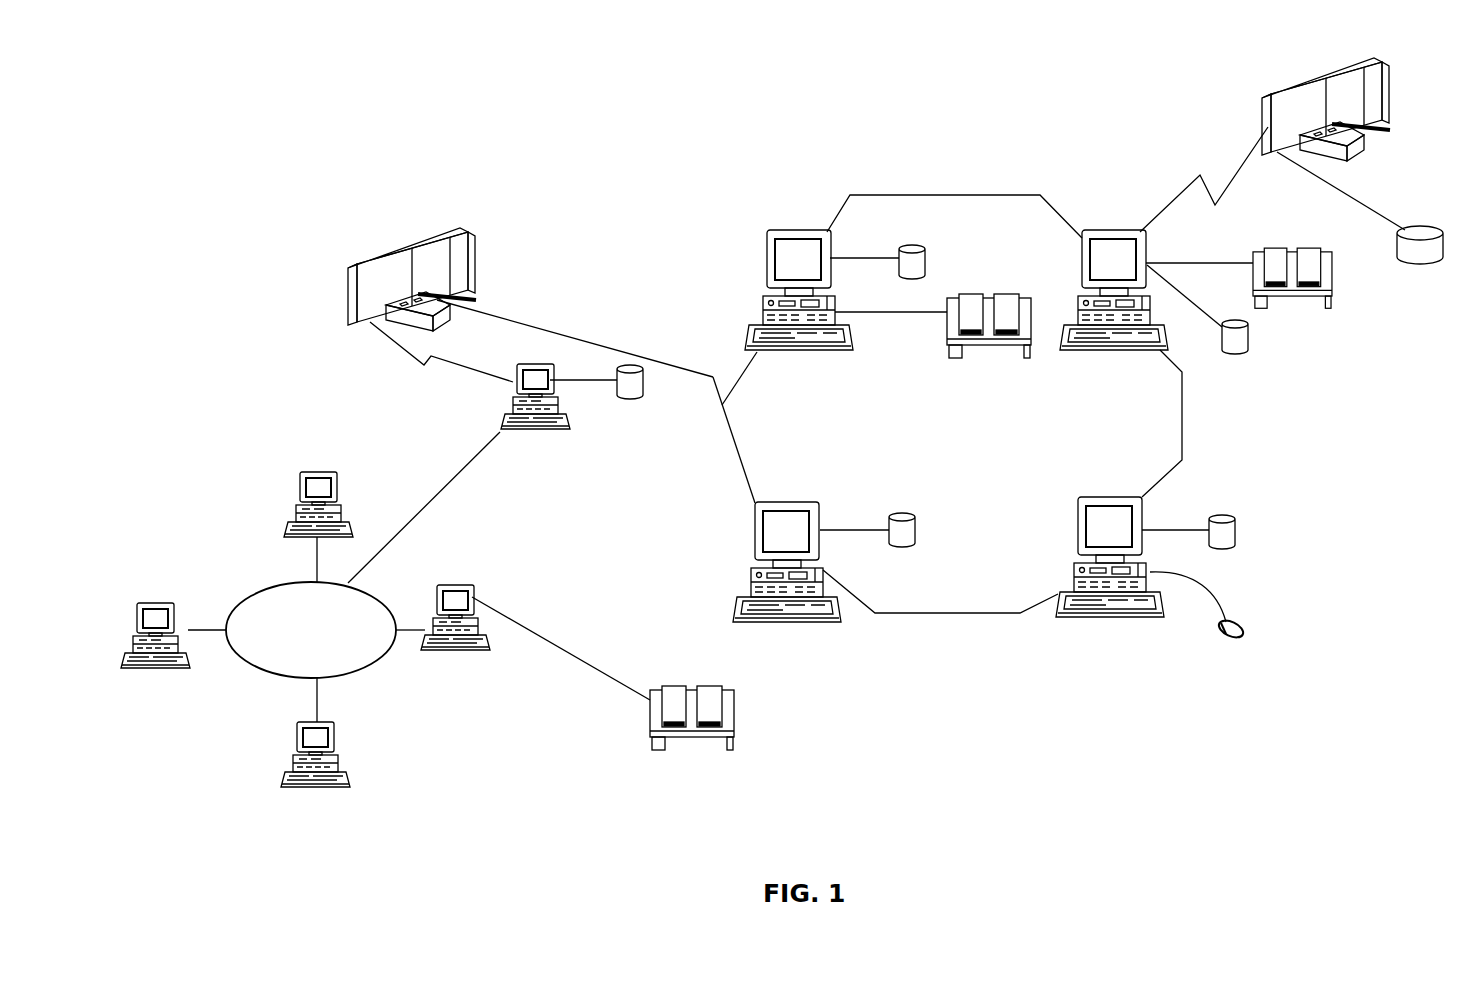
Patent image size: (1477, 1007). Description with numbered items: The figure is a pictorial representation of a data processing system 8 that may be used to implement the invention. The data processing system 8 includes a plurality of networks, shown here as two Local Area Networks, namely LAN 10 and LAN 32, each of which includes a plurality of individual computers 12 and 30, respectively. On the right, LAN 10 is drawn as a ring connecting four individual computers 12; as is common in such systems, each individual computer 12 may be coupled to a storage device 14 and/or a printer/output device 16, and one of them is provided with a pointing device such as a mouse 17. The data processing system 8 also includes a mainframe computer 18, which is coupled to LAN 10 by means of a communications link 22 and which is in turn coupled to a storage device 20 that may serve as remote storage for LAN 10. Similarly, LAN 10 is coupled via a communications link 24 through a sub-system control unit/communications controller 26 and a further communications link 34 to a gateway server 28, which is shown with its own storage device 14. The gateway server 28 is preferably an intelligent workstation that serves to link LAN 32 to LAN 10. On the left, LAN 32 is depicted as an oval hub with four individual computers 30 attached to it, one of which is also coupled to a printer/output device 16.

The data processing system 8 is at (968, 183).
The Local Area Network 10 is at (938, 613).
The individual computer 12 is at (783, 231).
The storage device 14 is at (925, 258).
The printer/output device 16 is at (990, 298).
The mouse 17 is at (1236, 624).
The mainframe computer 18 is at (1335, 79).
The storage device 20 is at (1432, 230).
The communications link 22 is at (1250, 153).
The communications link 24 is at (603, 346).
The sub-system control unit/communications controller 26 is at (468, 233).
The gateway server 28 is at (530, 365).
The individual computer 30 is at (312, 472).
The Local Area Network 32 is at (257, 670).
The communications link 34 is at (385, 337).